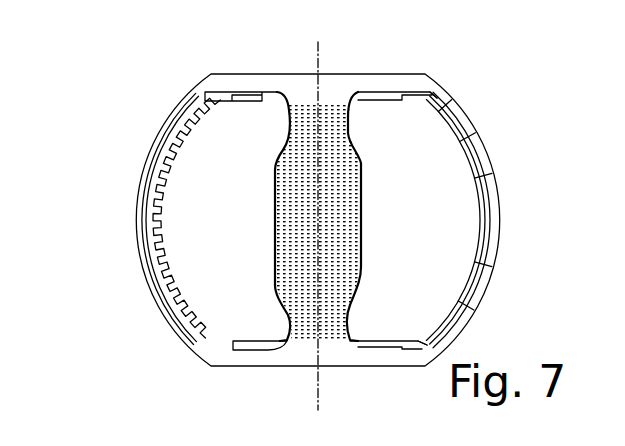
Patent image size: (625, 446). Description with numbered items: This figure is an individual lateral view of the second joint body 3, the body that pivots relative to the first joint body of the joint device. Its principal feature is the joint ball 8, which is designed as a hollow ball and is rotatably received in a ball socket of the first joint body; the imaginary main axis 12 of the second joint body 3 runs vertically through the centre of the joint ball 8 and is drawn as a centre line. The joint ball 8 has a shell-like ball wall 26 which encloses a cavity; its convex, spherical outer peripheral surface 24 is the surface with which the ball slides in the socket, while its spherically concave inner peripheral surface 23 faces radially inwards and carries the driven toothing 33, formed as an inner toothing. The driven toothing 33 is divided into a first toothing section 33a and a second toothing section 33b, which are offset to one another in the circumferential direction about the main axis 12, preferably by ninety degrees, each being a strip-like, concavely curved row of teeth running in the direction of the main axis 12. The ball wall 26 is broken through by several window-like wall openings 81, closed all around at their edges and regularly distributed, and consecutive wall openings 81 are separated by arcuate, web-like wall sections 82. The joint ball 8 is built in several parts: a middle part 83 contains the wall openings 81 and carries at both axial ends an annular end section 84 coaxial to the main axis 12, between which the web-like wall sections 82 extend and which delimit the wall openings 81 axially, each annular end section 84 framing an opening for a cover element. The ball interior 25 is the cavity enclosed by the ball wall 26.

The second joint body 3 is at (466, 108).
The joint ball 8 is at (167, 338).
The main axis 12 is at (320, 62).
The inner peripheral surface 23 is at (456, 285).
The outer peripheral surface 24 is at (140, 298).
The interior space 25 is at (463, 199).
The ball wall 26 is at (157, 180).
The driven toothing 33 is at (209, 265).
The first toothing section 33a is at (131, 217).
The second toothing section 33b is at (310, 300).
The wall openings 81 is at (457, 240).
The web-like wall section 82 is at (482, 152).
The middle part 83 is at (498, 268).
The annular end section 84 is at (403, 73).